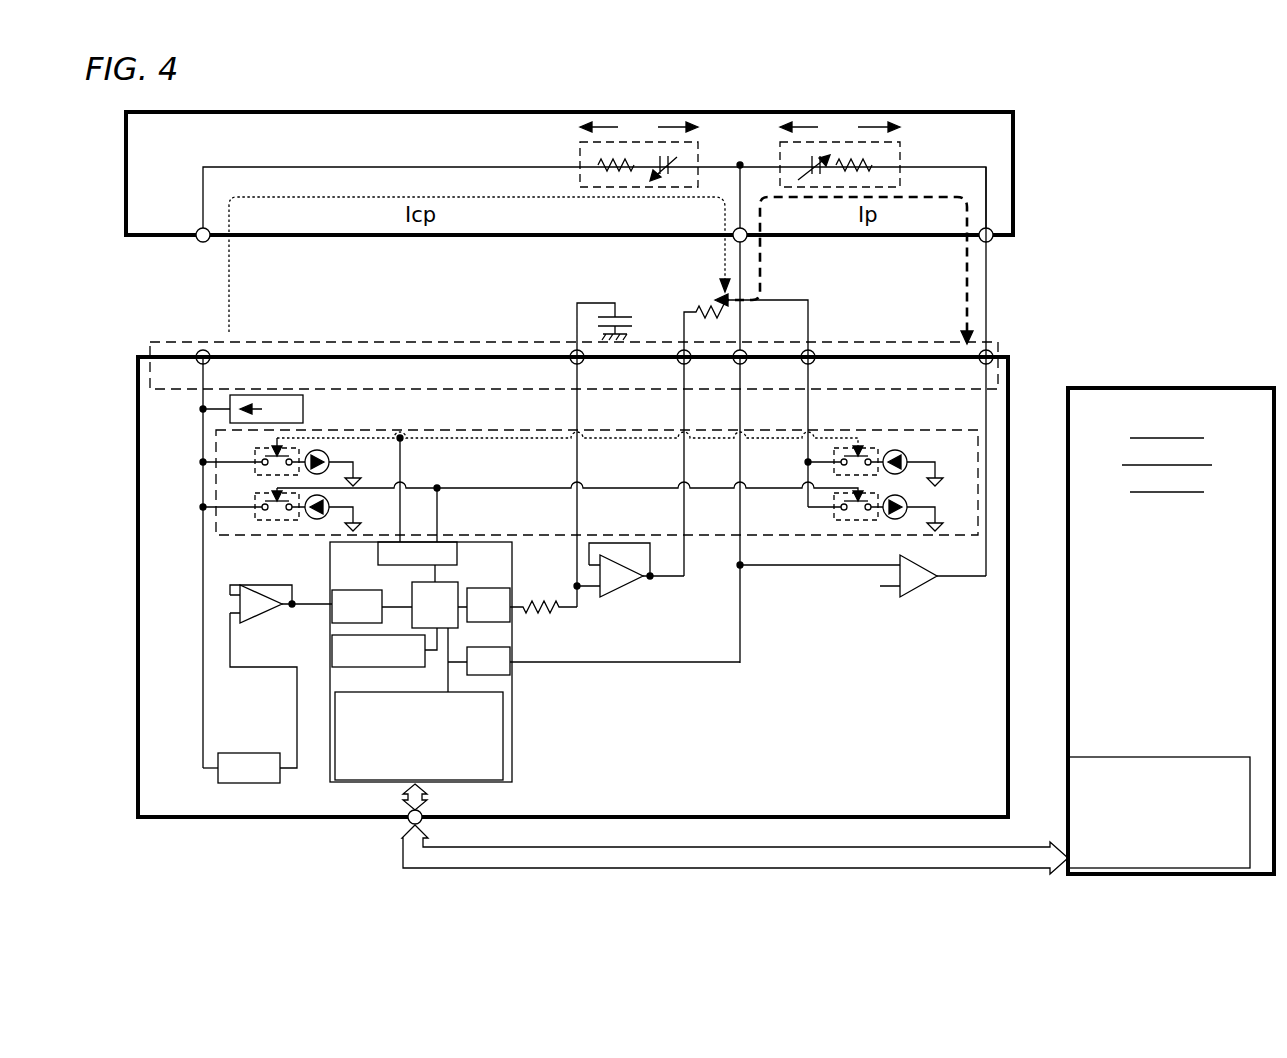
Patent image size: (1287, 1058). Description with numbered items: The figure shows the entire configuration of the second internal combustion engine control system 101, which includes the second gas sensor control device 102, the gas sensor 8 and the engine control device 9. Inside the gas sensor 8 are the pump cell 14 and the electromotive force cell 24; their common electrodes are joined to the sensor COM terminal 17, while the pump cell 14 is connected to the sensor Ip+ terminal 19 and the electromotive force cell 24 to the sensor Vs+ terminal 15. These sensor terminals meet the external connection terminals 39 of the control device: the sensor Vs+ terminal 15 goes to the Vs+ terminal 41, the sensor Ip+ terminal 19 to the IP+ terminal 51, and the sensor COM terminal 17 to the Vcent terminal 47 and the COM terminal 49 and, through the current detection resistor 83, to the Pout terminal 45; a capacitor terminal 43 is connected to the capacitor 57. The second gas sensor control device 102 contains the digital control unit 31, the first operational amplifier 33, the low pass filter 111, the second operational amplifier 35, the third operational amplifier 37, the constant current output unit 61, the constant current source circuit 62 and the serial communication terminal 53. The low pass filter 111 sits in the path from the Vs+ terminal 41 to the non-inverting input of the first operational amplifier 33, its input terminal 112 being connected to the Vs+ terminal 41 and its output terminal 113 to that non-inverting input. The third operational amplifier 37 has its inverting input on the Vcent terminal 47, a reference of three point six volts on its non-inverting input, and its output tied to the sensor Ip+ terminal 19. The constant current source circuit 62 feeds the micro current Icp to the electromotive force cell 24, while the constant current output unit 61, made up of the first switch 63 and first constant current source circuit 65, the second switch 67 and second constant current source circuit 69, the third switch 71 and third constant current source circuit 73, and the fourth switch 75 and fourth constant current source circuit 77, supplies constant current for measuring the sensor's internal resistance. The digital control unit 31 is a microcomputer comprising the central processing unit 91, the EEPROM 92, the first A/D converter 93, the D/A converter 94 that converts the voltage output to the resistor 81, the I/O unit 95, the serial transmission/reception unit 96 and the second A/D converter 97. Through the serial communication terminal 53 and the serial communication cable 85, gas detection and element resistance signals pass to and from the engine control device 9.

The gas sensor 8 is at (1013, 150).
The engine control device 9 is at (1220, 388).
The pump cell 14 is at (900, 165).
The sensor Vs+ terminal 15 is at (201, 230).
The sensor COM terminal 17 is at (743, 229).
The sensor Ip+ terminal 19 is at (993, 237).
The electromotive force cell 24 is at (580, 168).
The digital control unit 31 is at (456, 662).
The first operational amplifier 33 is at (262, 620).
The second operational amplifier 35 is at (622, 596).
The third operational amplifier 37 is at (918, 596).
The external connection terminals 39 is at (315, 340).
The Vs+ terminal 41 is at (202, 350).
The capacitor terminal 43 is at (575, 350).
The Pout terminal 45 is at (682, 350).
The Vcent terminal 47 is at (742, 351).
The COM terminal 49 is at (810, 350).
The IP+ terminal 51 is at (988, 350).
The serial communication terminal 53 is at (408, 823).
The capacitor 57 is at (618, 305).
The constant current output unit 61 is at (428, 421).
The constant current source circuit 62 is at (303, 409).
The first switch 63 is at (255, 451).
The first constant current source circuit 65 is at (330, 456).
The second switch 67 is at (880, 452).
The second constant current source circuit 69 is at (907, 461).
The third switch 71 is at (262, 516).
The third constant current source circuit 73 is at (330, 502).
The fourth switch 75 is at (834, 513).
The fourth constant current source circuit 77 is at (907, 505).
The resistor 81 is at (560, 612).
The current detection resistor 83 is at (712, 311).
The serial communication cable 85 is at (815, 868).
The central processing unit 91 is at (422, 582).
The EEPROM 92 is at (366, 668).
The first A/D converter 93 is at (355, 590).
The D/A converter 94 is at (478, 588).
The I/O unit 95 is at (458, 552).
The serial transmission/reception unit 96 is at (414, 692).
The second A/D converter 97 is at (478, 647).
The second internal combustion engine control system 101 is at (1237, 178).
The second gas sensor control device 102 is at (203, 819).
The low pass filter 111 is at (240, 784).
The input terminal 112 is at (218, 766).
The output terminal 113 is at (282, 780).